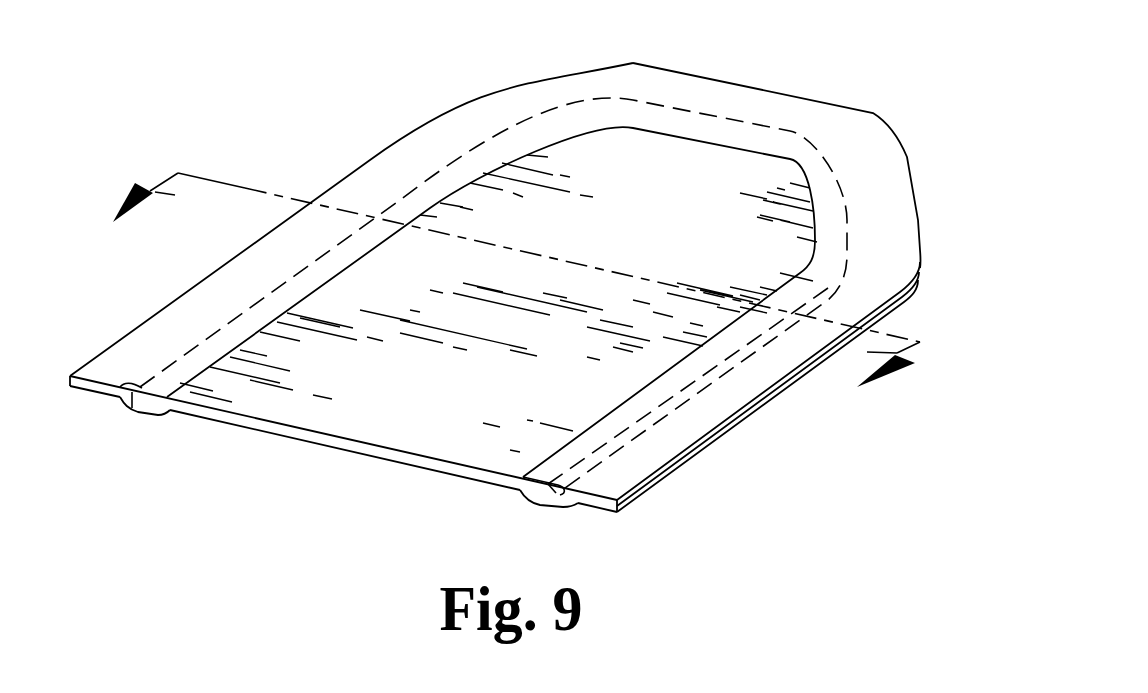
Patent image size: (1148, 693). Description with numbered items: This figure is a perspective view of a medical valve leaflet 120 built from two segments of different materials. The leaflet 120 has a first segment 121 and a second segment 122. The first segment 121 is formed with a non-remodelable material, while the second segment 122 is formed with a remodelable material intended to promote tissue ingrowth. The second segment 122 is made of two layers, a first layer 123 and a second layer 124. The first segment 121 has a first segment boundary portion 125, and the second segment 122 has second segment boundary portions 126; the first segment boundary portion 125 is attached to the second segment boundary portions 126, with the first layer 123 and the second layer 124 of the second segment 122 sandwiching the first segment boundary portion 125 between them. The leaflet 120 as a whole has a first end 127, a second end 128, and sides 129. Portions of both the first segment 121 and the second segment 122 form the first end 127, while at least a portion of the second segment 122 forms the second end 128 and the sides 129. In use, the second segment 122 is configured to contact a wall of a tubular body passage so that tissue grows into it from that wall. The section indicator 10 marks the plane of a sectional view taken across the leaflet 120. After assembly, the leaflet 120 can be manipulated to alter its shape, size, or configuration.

The section line 10- 10 is at (504, 294).
The medical valve leaflet 120 is at (265, 108).
The first segment 121 is at (368, 280).
The second segment 122 is at (390, 167).
The first layer 123 is at (92, 370).
The second layer 124 is at (80, 391).
The first segment boundary portion 125 is at (518, 497).
The second segment boundary portions 126 is at (553, 470).
The first end 127 is at (350, 453).
The second end 128 is at (773, 88).
The sides 129 is at (317, 194).